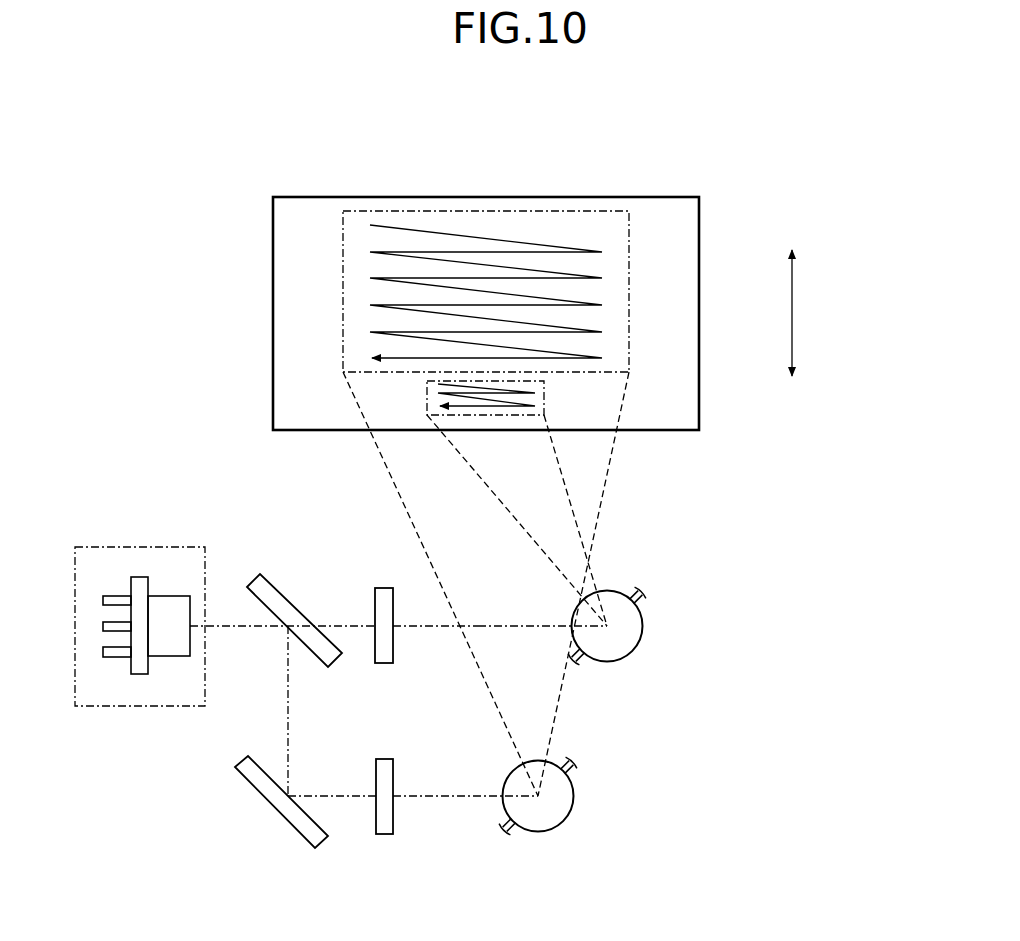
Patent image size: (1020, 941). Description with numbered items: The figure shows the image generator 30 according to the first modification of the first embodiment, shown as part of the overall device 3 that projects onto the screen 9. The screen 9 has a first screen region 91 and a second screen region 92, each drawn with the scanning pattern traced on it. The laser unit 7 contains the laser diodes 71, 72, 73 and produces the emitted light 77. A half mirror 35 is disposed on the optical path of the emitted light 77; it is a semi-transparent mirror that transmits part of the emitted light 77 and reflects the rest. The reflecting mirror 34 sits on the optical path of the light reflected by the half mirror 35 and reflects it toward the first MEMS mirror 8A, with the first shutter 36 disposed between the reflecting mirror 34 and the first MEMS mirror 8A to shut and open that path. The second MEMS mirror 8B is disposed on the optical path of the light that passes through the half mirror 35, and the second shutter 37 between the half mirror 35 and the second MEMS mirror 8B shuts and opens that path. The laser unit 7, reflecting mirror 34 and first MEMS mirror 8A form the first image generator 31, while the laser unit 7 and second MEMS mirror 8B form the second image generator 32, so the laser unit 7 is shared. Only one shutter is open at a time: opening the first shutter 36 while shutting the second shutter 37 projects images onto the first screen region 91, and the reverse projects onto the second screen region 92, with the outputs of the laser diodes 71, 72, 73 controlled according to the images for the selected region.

The image display device 3 is at (243, 133).
The image generator 30 is at (186, 255).
The screen 9 is at (668, 197).
The first screen region 91 is at (548, 211).
The second screen region 92 is at (544, 392).
The laser unit 7 is at (96, 547).
The laser diode 71 is at (140, 573).
The laser diode 72 is at (169, 565).
The laser diode 73 is at (164, 565).
The emitted light 77 is at (233, 628).
The half mirror 35 is at (278, 583).
The reflecting mirror 34 is at (275, 817).
The first shutter 36 is at (383, 759).
The second shutter 37 is at (383, 588).
The first image generator 31 is at (459, 793).
The second image generator 32 is at (514, 622).
The first MEMS mirror 8A is at (578, 787).
The second MEMS mirror 8B is at (645, 613).